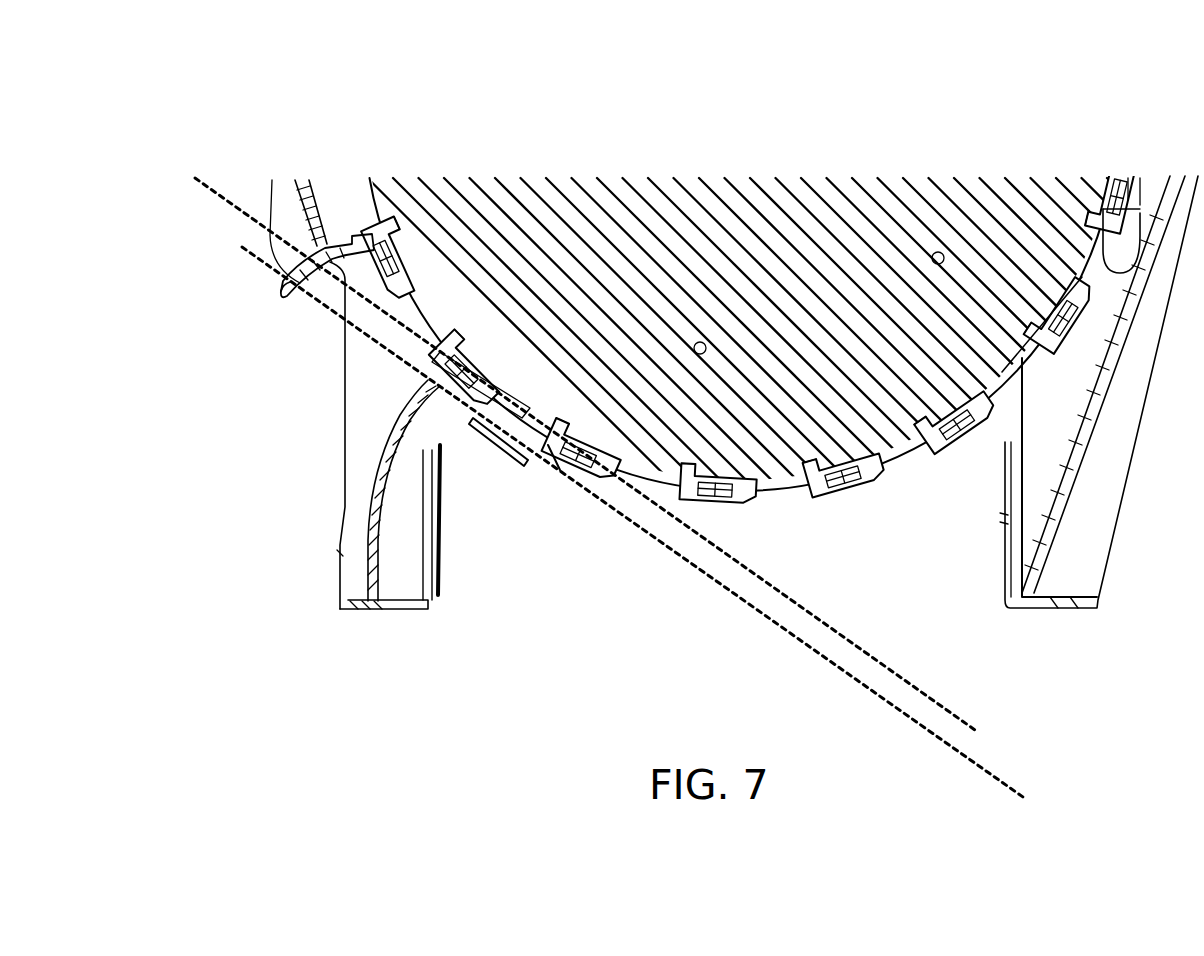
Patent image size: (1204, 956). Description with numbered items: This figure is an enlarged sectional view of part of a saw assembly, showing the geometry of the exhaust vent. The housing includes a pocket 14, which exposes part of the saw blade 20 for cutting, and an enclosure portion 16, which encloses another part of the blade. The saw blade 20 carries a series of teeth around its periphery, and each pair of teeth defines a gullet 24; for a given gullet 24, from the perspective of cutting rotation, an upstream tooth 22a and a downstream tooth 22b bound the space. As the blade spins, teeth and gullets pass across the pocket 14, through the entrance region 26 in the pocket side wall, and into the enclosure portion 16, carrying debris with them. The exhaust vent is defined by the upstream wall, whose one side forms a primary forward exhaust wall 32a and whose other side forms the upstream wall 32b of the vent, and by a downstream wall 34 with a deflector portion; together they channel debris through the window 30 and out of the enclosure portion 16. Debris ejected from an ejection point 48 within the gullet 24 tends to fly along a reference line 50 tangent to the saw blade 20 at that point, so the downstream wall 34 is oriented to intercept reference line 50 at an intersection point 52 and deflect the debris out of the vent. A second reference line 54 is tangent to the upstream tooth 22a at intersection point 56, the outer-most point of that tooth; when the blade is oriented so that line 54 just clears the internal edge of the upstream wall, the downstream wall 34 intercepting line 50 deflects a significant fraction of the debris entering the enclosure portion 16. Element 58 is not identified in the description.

The pocket 14 is at (677, 592).
The enclosure portion 16 is at (305, 178).
The saw blade 20 is at (875, 198).
The upstream tooth 22a is at (587, 475).
The downstream tooth 22b is at (433, 360).
The gullet 24 is at (498, 447).
The entrance region 26 is at (405, 376).
The window 30 is at (318, 326).
The primary forward exhaust wall 32a is at (385, 590).
The upstream wall of exhaust vent 32b is at (365, 525).
The downstream wall 34 is at (290, 262).
The ejection point 48 is at (515, 405).
The reference line 50 is at (912, 682).
The intersection point 52 is at (323, 247).
The second reference line 54 is at (810, 647).
The intersection point 56 is at (545, 463).
The hook tip 58 is at (280, 287).